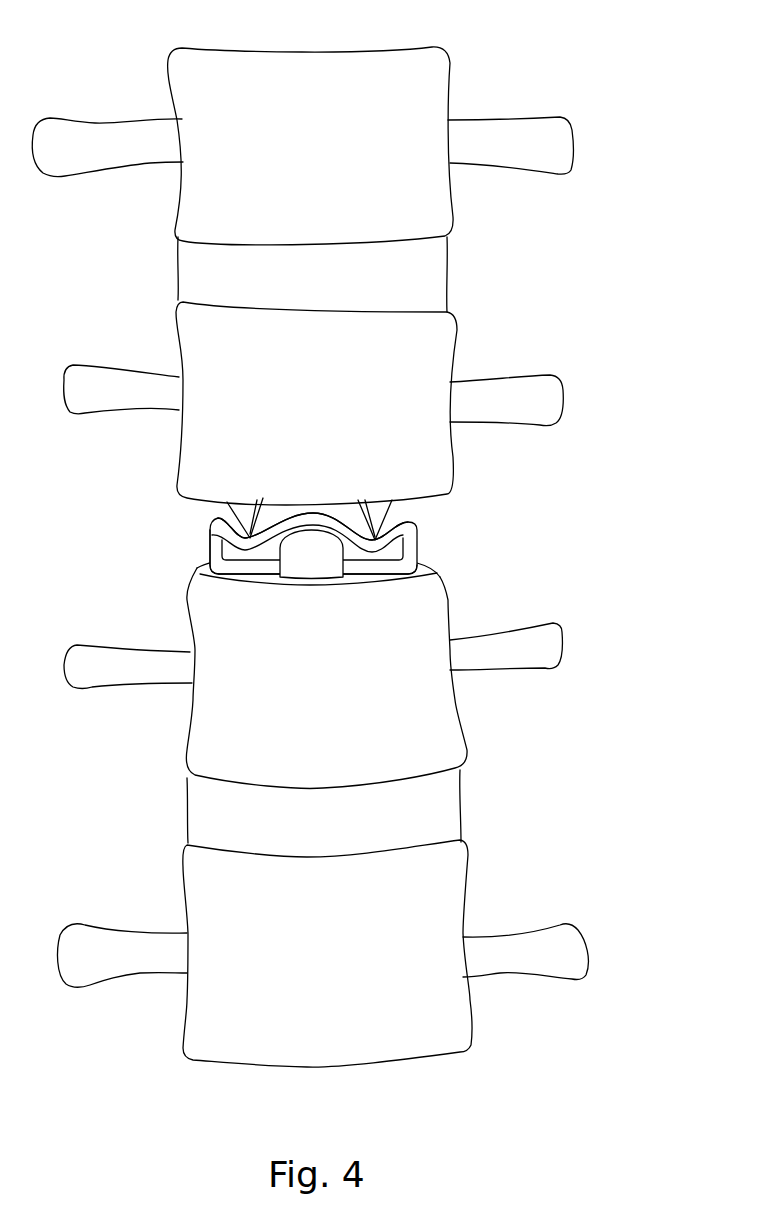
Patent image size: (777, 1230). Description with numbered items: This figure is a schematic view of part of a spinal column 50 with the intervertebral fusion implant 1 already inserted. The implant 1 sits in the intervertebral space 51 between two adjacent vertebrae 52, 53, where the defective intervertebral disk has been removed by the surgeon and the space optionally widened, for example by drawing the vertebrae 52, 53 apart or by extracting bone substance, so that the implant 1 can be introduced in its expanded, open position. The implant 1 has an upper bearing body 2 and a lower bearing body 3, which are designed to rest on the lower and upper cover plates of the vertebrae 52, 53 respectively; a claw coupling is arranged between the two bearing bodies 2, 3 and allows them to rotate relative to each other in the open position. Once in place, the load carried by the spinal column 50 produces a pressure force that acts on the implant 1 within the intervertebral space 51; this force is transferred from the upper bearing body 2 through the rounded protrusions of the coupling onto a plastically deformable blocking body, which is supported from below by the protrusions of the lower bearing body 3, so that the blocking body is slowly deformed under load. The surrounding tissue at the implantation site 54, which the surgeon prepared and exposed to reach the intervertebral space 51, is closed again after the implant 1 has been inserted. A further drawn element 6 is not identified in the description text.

The intervertebral fusion implant 1 is at (324, 550).
The upper bearing body 2 is at (387, 518).
The lower bearing body 3 is at (405, 565).
The core insert 6 is at (248, 541).
The spinal column 50 is at (570, 263).
The intervertebral space 51 is at (423, 540).
The vertebra 52 is at (433, 470).
The vertebra 53 is at (437, 720).
The implantation site 54 is at (203, 540).